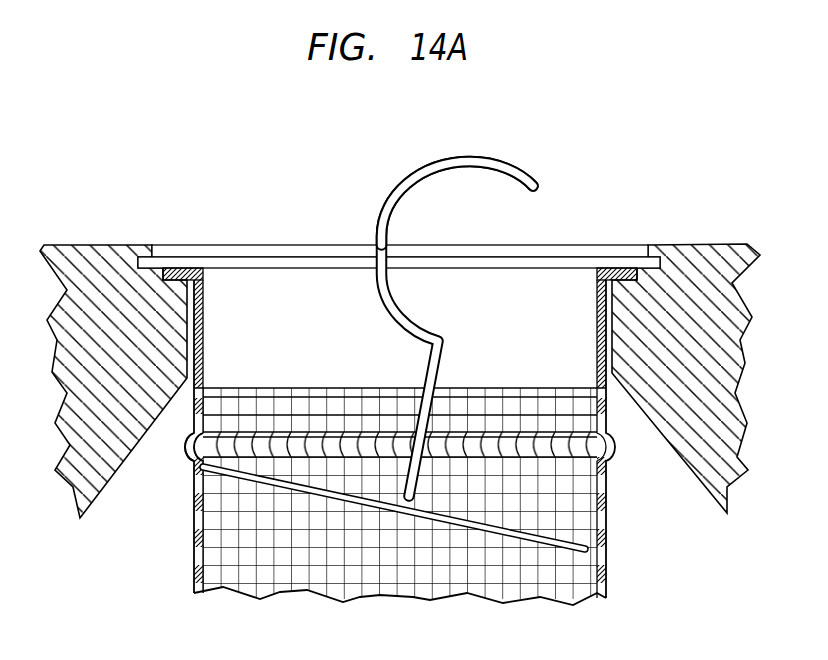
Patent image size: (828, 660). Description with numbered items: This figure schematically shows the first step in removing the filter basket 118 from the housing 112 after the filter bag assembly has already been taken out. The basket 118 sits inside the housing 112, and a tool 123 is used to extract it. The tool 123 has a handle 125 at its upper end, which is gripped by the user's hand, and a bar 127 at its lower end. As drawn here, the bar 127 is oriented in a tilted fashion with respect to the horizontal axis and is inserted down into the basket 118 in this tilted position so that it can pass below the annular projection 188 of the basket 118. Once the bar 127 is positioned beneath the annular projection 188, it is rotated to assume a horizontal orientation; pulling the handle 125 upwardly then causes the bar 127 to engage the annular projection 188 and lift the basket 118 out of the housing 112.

The housing 112 is at (108, 262).
The filter basket 118 is at (280, 287).
The tool 123 is at (428, 293).
The handle 125 is at (450, 156).
The bar 127 is at (318, 493).
The annular projection 188 is at (190, 444).